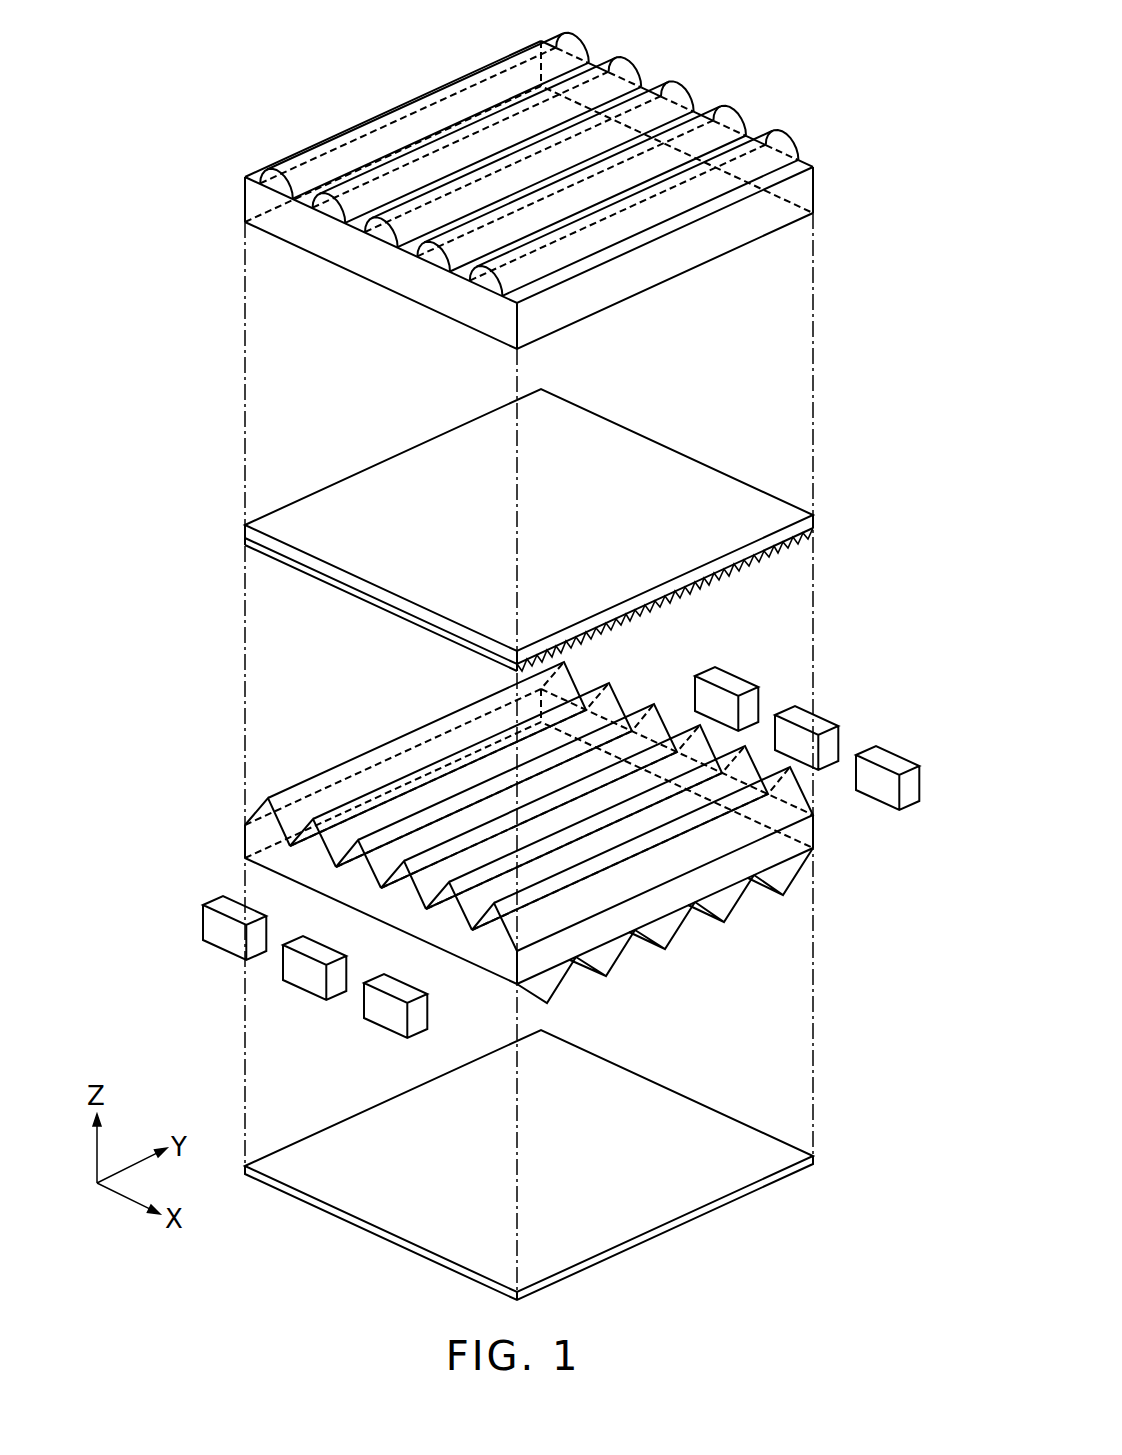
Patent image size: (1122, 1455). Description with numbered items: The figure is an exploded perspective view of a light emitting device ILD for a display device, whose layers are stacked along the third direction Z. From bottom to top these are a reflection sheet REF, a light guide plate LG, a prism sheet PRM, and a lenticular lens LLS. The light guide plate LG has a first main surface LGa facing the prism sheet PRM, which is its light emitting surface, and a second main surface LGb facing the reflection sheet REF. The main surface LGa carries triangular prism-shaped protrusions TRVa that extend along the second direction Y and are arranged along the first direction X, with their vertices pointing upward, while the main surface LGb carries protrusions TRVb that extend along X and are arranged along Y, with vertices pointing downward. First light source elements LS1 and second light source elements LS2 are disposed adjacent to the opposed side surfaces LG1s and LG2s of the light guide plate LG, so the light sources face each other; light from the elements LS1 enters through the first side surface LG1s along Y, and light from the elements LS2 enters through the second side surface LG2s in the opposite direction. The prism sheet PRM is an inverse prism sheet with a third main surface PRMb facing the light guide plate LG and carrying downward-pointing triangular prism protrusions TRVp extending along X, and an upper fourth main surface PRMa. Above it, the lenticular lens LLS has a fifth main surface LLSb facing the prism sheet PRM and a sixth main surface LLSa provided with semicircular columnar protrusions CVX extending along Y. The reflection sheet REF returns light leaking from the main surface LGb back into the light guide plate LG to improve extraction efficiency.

The light emitting device ILD is at (891, 52).
The lenticular lens LLS is at (814, 187).
The main surface of lenticular lens (sixth main surface) LLSa is at (745, 79).
The main surface of lenticular lens (fifth main surface) LLSb is at (695, 294).
The semicircular columnar protrusions (fourth protrusions) CVX is at (623, 61).
The prism sheet PRM is at (358, 470).
The main surface of prism sheet (fourth main surface) PRMa is at (731, 484).
The main surface of prism sheet (third main surface) PRMb is at (734, 610).
The triangular prism-shaped protrusions (third protrusions) TRVp is at (814, 532).
The light guide plate LG is at (190, 798).
The main surface of light guide plate (first main surface) LGa is at (381, 692).
The main surface of light guide plate (second main surface) LGb is at (606, 997).
The side surface of light guide plate (first side surface) LG1s is at (245, 843).
The side surface of light guide plate (second side surface) LG2s is at (616, 708).
The triangular prism-shaped protrusions (first protrusions) TRVa is at (812, 790).
The triangular prism-shaped protrusions (second protrusions) TRVb is at (673, 926).
The light source elements (first light source elements) LS1 is at (204, 923).
The light source elements (second light source elements) LS2 is at (896, 752).
The reflection sheet REF is at (356, 1228).